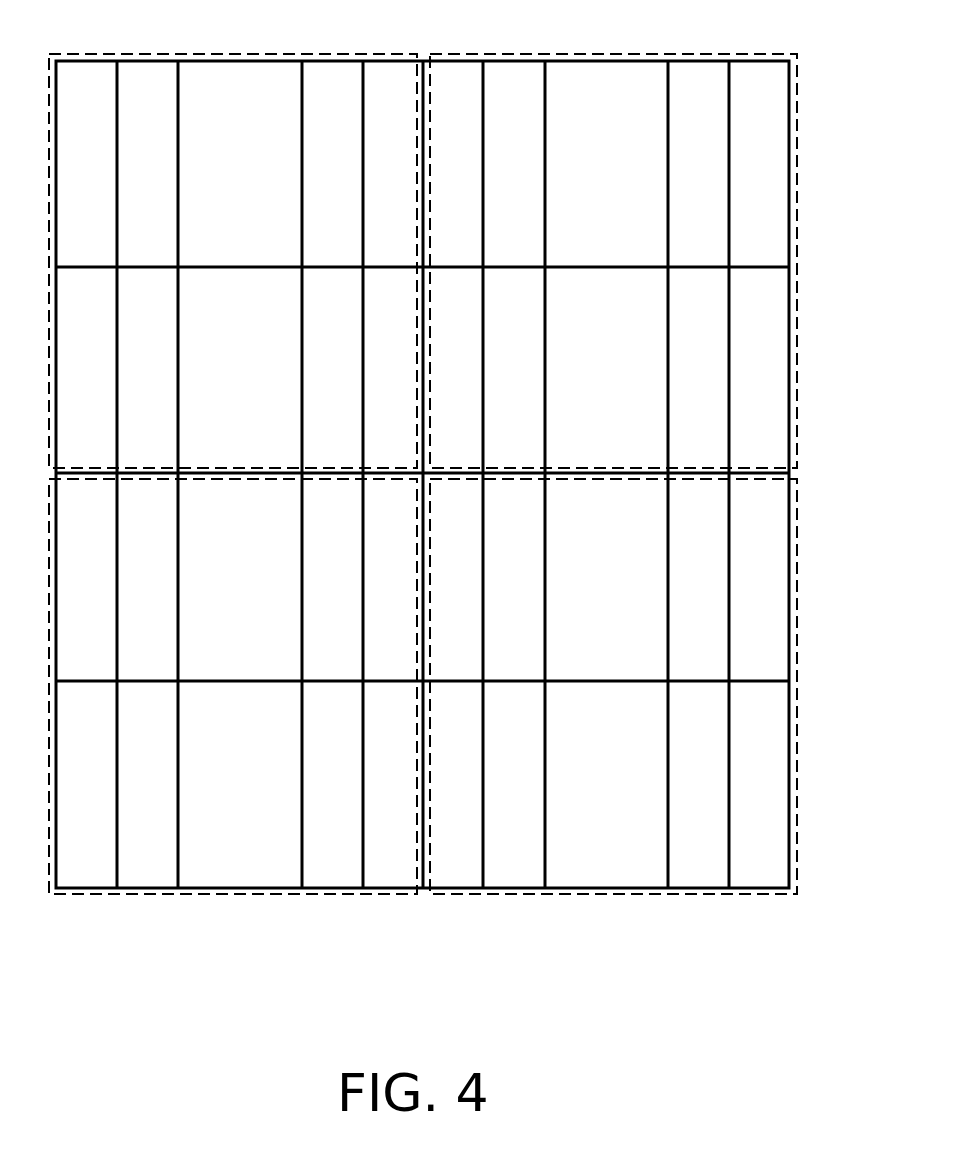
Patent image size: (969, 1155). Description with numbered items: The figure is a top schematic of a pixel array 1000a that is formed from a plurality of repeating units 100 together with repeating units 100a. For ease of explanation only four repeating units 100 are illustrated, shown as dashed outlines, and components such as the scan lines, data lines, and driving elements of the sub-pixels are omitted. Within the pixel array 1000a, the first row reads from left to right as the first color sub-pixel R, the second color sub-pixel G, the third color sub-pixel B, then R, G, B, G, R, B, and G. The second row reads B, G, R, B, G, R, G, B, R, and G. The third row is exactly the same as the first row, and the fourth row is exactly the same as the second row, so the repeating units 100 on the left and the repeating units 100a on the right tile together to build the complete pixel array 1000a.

The repeating unit 100 is at (344, 55).
The repeating unit 100a is at (722, 55).
The pixel array 1000a is at (873, 1006).